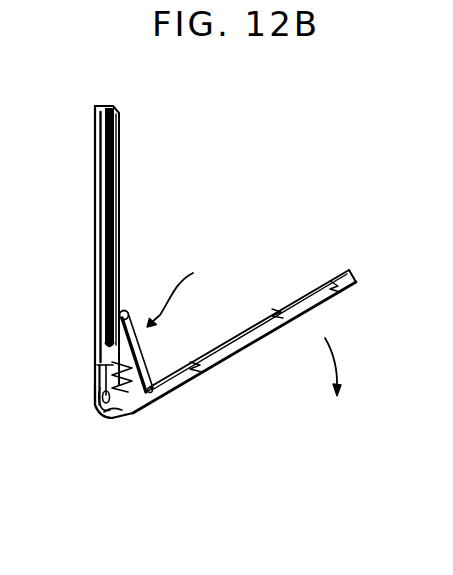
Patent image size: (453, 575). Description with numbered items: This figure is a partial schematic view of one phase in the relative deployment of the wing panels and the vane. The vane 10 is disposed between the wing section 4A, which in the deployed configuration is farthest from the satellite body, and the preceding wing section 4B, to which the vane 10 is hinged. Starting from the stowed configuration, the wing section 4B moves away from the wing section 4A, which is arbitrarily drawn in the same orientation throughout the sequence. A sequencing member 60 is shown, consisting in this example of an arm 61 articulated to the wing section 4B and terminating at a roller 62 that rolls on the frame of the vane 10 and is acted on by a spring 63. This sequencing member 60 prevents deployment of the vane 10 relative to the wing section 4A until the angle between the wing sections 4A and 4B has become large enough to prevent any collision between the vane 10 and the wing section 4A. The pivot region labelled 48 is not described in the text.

The wing section 4A is at (95, 225).
The wing section 4B is at (225, 359).
The vane 10 is at (119, 141).
The pivot hook 48 is at (102, 411).
The sequencing member 60 is at (186, 293).
The arm 61 is at (152, 366).
The roller 62 is at (124, 310).
The spring 63 is at (103, 367).